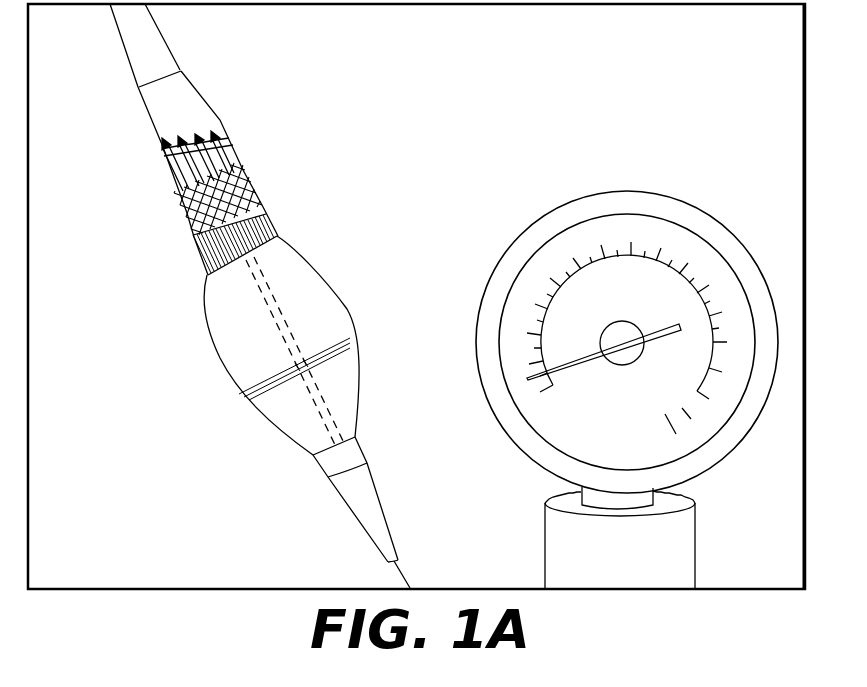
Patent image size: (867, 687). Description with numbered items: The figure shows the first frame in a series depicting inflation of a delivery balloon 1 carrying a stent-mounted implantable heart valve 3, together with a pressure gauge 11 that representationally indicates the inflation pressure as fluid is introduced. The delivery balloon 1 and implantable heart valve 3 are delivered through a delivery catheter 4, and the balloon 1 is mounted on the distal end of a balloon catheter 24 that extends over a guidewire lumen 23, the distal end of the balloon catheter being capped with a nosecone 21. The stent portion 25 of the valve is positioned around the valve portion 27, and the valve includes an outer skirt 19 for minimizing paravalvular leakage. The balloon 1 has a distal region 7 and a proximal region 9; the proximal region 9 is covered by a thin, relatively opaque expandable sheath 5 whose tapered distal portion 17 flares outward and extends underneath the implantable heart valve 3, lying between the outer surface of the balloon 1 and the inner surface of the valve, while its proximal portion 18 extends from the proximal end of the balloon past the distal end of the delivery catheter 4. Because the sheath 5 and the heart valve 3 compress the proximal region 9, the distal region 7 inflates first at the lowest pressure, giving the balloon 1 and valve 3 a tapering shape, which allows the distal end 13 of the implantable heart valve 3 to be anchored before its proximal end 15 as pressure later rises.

The delivery balloon 1 is at (193, 399).
The implantable heart valve 3 is at (310, 126).
The delivery catheter 4 is at (153, 50).
The expandable sheath 5 is at (124, 126).
The distal region 7 is at (352, 356).
The proximal region 9 is at (183, 102).
The pressure gauge 11 is at (658, 168).
The distal end 13 is at (192, 233).
The proximal end 15 is at (167, 157).
The distal portion 17 is at (143, 212).
The proximal portion 18 is at (163, 88).
The outer skirt 19 is at (263, 228).
The nosecone 21 is at (370, 510).
The guidewire lumen 23 is at (406, 580).
The balloon catheter 24 is at (322, 413).
The stent portion 25 is at (252, 178).
The valve portion 27 is at (227, 155).